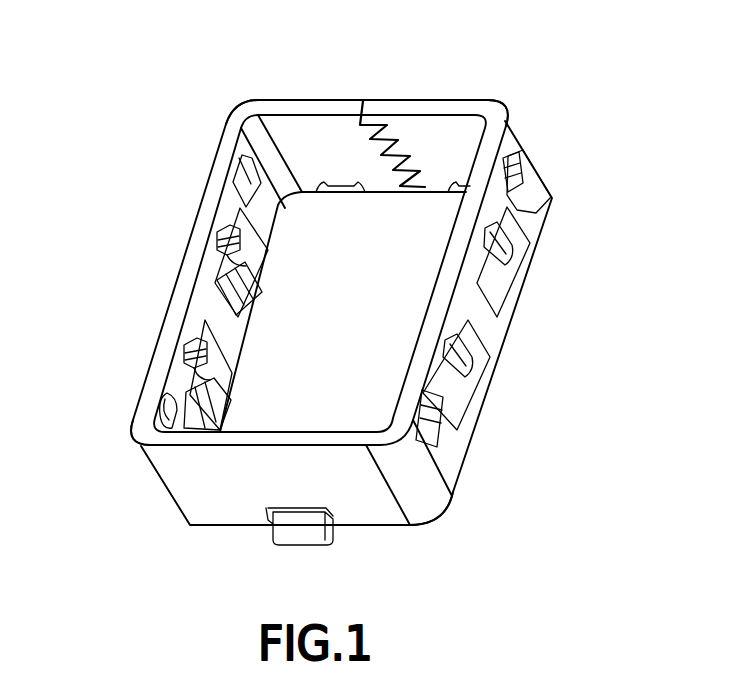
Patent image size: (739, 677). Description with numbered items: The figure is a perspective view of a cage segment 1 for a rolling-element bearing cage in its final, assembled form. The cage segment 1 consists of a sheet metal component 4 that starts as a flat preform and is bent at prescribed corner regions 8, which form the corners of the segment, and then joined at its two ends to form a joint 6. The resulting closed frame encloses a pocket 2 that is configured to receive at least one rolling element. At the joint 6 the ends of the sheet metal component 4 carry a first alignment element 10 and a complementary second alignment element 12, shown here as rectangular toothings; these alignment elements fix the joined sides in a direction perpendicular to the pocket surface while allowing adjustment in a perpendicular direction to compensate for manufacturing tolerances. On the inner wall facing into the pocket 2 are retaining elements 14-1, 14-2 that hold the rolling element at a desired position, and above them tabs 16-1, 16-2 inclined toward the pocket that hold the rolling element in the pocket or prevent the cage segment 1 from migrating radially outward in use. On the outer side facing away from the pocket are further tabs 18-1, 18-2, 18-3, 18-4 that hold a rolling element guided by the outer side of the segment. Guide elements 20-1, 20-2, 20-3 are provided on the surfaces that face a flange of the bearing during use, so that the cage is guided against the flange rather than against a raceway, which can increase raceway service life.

The cage segment 1 is at (572, 84).
The pocket 2 is at (311, 372).
The sheet metal component 4 is at (437, 516).
The joint 6 is at (362, 107).
The corner regions 8 is at (240, 113).
The first alignment element 10 is at (398, 78).
The second alignment element 12 is at (338, 77).
The retaining element 14-1 is at (257, 278).
The retaining element 14-2 is at (220, 394).
The tab 16-1 is at (229, 234).
The tab 16-2 is at (195, 343).
The further tab 18-1 is at (250, 192).
The further tab 18-2 is at (172, 420).
The further tab 18-3 is at (443, 430).
The further tab 18-4 is at (517, 188).
The guide element 20-1 is at (306, 544).
The guide element 20-2 is at (462, 193).
The guide element 20-3 is at (340, 193).